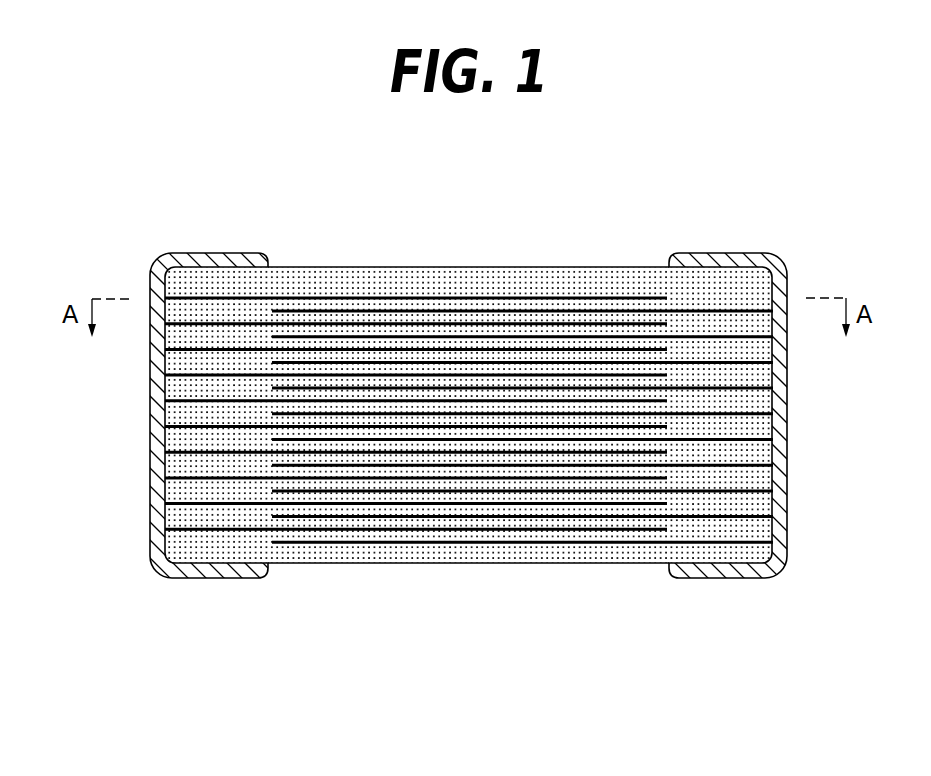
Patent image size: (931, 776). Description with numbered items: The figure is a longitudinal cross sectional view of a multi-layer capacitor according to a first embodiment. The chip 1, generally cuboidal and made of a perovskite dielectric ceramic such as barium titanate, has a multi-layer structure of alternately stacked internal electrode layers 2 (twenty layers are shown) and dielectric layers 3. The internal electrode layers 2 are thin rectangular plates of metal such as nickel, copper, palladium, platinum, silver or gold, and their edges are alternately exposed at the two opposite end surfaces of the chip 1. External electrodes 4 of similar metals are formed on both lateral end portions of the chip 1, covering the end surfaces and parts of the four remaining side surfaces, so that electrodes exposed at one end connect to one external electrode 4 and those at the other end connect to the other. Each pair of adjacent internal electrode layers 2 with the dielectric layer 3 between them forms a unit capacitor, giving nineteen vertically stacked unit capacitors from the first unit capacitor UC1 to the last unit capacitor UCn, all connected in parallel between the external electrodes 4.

The chip 1 is at (560, 266).
The internal electrode layers 2 is at (328, 298).
The dielectric layers 3 is at (431, 298).
The external electrodes 4 is at (213, 251).
The first unit capacitor UC1 is at (273, 301).
The n-th unit capacitor UCn is at (277, 534).